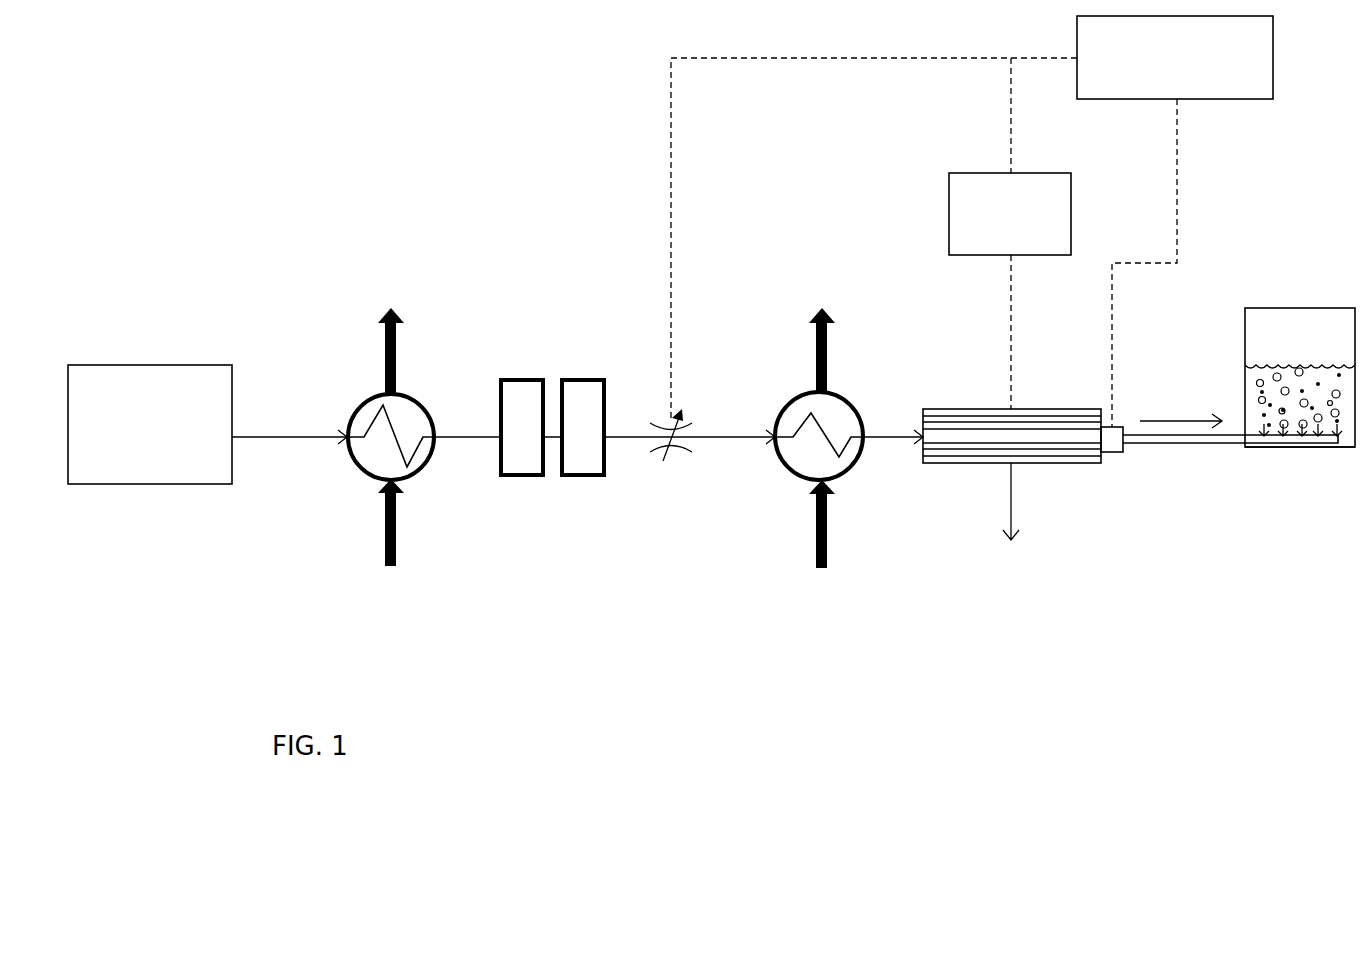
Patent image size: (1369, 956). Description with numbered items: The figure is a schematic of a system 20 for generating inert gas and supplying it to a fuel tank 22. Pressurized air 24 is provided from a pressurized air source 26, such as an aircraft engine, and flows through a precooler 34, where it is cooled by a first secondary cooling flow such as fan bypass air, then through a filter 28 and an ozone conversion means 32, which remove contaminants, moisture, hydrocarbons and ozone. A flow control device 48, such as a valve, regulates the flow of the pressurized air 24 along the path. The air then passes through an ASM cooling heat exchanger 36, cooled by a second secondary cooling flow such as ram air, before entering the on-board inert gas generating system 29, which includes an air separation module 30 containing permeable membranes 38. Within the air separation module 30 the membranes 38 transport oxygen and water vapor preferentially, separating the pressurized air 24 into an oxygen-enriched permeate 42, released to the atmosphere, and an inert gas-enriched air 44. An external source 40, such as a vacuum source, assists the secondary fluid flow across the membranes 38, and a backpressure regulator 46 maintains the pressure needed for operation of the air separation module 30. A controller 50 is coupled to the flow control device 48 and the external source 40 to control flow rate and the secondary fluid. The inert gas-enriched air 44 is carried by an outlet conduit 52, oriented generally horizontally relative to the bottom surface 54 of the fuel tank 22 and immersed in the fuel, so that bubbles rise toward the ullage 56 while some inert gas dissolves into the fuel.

The system 20 is at (270, 153).
The fuel tank 22 is at (1305, 273).
The pressurized air 24 is at (289, 464).
The pressurized air source 26 is at (150, 424).
The filter 28 is at (522, 447).
The on-board inert gas generating system 29 is at (968, 519).
The air separation module 30 is at (960, 408).
The ozone conversion means 32 is at (582, 447).
The precooler 34 is at (378, 393).
The ASM cooling heat exchanger 36 is at (856, 405).
The permeable membrane 38 is at (1052, 435).
The external source 40 is at (1010, 233).
The oxygen-enriched permeate 42 is at (1026, 501).
The inert gas-enriched air 44 is at (1181, 410).
The backpressure regulator 46 is at (1110, 437).
The flow control device 48 is at (684, 446).
The controller 50 is at (972, 221).
The outlet conduit 52 is at (1173, 444).
The bottom surface 54 is at (1333, 449).
The ullage 56 is at (1260, 330).